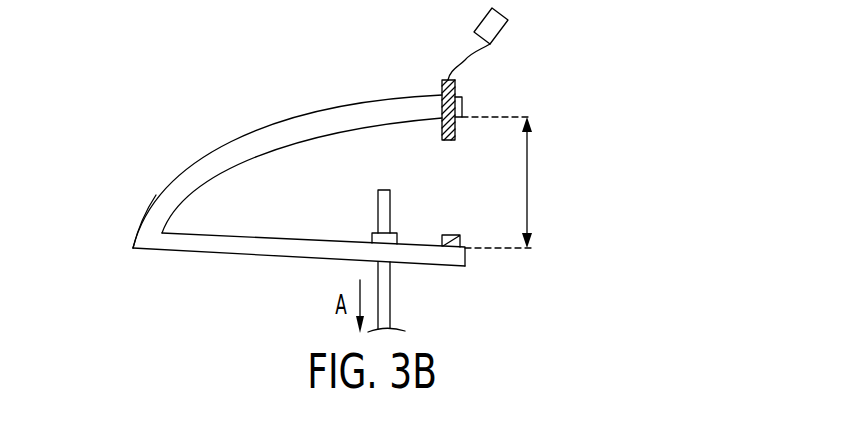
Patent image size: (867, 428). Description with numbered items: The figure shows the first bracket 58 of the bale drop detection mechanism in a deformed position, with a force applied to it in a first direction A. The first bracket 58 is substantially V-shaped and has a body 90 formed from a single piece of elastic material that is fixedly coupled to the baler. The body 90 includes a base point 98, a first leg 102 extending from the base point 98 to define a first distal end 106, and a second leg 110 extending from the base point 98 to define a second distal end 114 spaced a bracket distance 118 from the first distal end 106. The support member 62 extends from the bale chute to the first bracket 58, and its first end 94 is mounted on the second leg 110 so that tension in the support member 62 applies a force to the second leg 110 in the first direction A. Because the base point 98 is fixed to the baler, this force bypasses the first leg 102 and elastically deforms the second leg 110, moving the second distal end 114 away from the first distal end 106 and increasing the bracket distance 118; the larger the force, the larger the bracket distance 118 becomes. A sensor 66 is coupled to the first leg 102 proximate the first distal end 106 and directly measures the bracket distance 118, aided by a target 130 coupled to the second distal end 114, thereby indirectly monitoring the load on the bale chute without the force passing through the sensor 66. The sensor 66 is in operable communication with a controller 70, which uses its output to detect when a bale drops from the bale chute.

The first bracket 58 is at (132, 157).
The body 90 is at (225, 150).
The base point 98 is at (157, 214).
The first leg 102 is at (333, 118).
The second leg 110 is at (320, 253).
The second distal end 114 is at (467, 255).
The first end 94 is at (383, 189).
The support member 62 is at (392, 303).
The target 130 is at (450, 235).
The sensor 66 is at (455, 86).
The first distal end 106 is at (462, 105).
The controller 70 is at (508, 20).
The bracket distance 118 is at (529, 163).